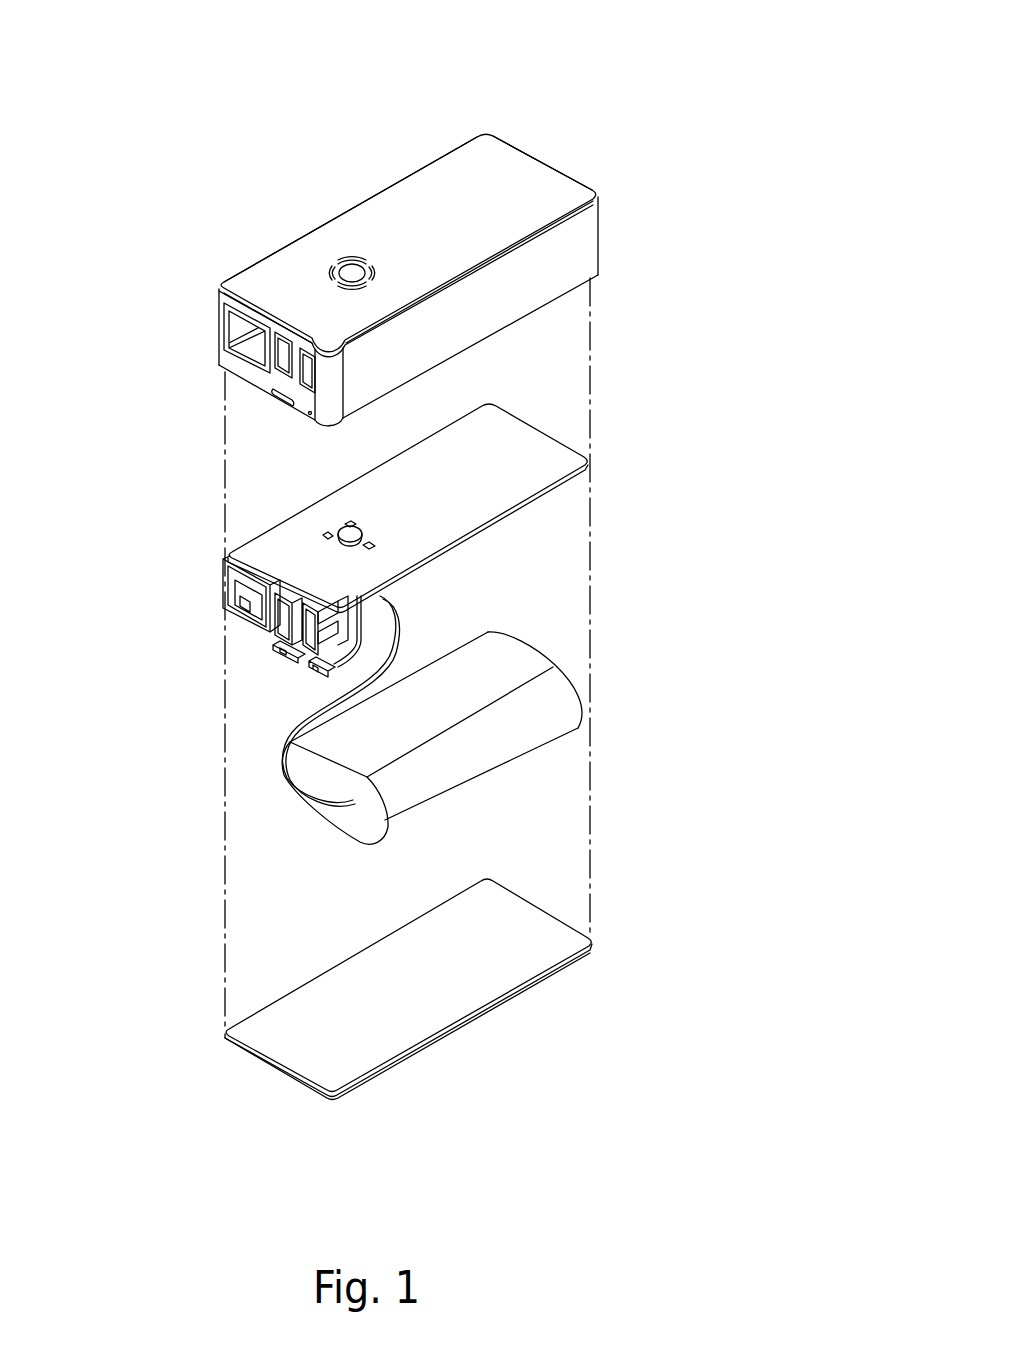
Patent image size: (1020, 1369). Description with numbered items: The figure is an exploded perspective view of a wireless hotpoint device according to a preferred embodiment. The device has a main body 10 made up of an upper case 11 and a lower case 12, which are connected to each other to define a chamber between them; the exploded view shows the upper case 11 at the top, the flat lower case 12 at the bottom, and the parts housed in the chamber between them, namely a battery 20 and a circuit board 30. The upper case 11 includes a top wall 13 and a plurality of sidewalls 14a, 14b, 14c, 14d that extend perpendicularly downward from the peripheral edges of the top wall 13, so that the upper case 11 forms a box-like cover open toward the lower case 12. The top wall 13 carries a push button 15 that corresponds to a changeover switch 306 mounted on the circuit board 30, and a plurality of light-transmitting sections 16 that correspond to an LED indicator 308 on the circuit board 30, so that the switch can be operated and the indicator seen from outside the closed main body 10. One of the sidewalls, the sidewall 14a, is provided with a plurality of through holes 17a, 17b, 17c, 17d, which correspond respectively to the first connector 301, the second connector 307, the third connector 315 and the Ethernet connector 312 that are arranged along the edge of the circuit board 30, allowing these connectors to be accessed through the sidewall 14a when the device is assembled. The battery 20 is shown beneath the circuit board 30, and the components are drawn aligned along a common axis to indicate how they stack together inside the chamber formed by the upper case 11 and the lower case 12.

The main body 10 is at (735, 46).
The upper case 11 is at (394, 251).
The lower case 12 is at (540, 980).
The top wall 13 is at (402, 222).
The sidewall 14a is at (248, 375).
The sidewall 14b is at (540, 270).
The sidewall 14c is at (585, 178).
The sidewall 14d is at (448, 148).
The push button 15 is at (352, 268).
The light-transmitting sections 16 is at (328, 273).
The through hole 17a is at (238, 330).
The through hole 17b is at (285, 357).
The through hole 17c is at (308, 373).
The through hole 17d is at (287, 392).
The battery 20 is at (568, 705).
The circuit board 30 is at (383, 559).
The first connector 301 is at (288, 656).
The changeover switch 306 is at (345, 530).
The second connector 307 is at (277, 628).
The LED indicator 308 is at (327, 533).
The Ethernet connector 312 is at (225, 583).
The third connector 315 is at (305, 666).